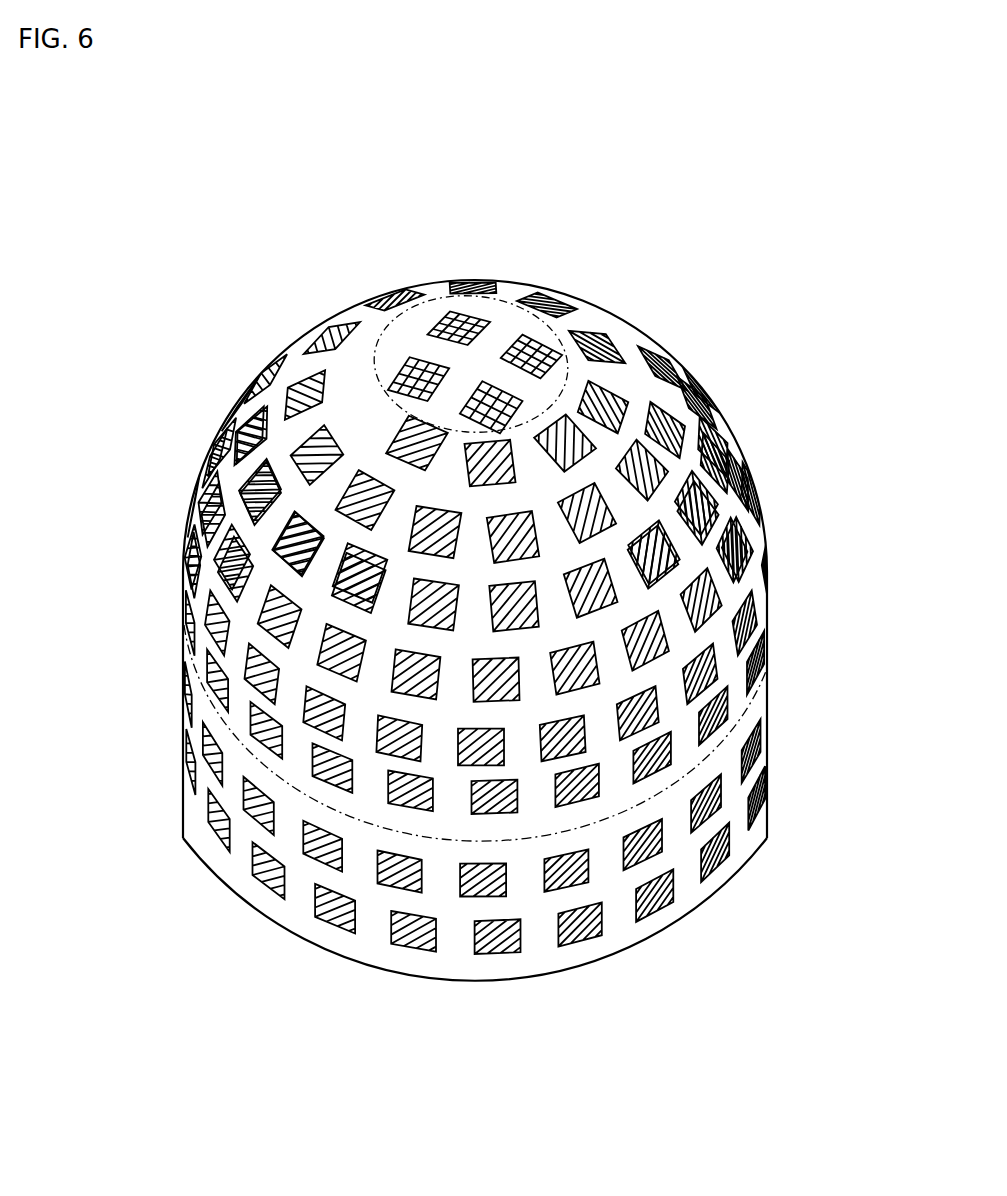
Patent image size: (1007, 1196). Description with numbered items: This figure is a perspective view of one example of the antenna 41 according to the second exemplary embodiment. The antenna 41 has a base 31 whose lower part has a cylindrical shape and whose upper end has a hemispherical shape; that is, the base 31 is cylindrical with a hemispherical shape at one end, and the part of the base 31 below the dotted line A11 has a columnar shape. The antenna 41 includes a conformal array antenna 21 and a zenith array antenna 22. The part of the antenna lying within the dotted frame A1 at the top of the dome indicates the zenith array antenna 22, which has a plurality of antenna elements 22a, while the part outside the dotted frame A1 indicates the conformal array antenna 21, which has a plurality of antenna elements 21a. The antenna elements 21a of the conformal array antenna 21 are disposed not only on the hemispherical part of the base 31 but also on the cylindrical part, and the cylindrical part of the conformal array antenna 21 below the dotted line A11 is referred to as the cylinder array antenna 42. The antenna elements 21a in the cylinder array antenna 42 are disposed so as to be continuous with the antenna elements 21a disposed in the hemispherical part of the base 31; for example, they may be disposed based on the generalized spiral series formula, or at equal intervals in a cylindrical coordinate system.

The antenna 41 is at (518, 176).
The conformal array antenna 21 is at (158, 315).
The antenna element 21a is at (342, 930).
The zenith array antenna 22 is at (492, 330).
The antenna element 22a is at (440, 317).
The dotted frame A1 is at (383, 350).
The dotted line A11 is at (768, 640).
The base 31 is at (618, 930).
The cylinder array antenna 42 is at (175, 668).